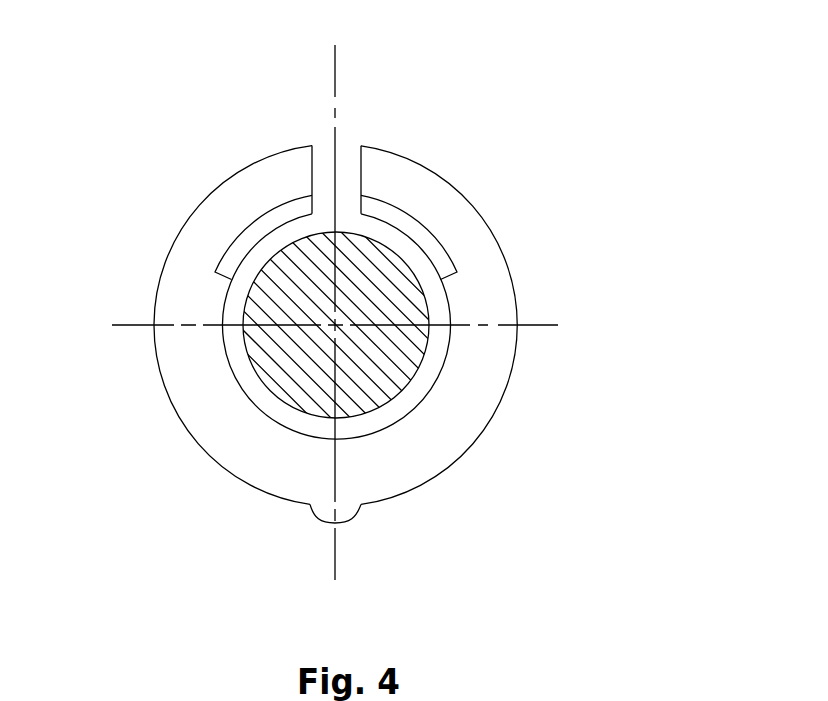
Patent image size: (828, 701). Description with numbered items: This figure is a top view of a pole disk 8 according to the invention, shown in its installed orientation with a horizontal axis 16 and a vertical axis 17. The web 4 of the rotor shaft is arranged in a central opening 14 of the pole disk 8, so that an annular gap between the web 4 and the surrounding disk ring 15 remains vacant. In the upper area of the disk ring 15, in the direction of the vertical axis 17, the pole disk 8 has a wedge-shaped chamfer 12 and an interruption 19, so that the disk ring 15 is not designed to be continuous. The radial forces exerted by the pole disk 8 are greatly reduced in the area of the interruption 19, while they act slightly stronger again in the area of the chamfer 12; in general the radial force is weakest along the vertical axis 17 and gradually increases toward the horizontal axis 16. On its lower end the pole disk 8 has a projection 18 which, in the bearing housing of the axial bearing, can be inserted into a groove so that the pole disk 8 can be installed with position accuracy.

The web 4 is at (380, 378).
The pole disk 8 is at (438, 475).
The chamfer 12 is at (233, 253).
The central opening 14 is at (240, 360).
The disk ring 15 is at (467, 232).
The horizontal axis 16 is at (540, 327).
The vertical axis 17 is at (333, 543).
The projection 18 is at (347, 513).
The interruption 19 is at (345, 163).